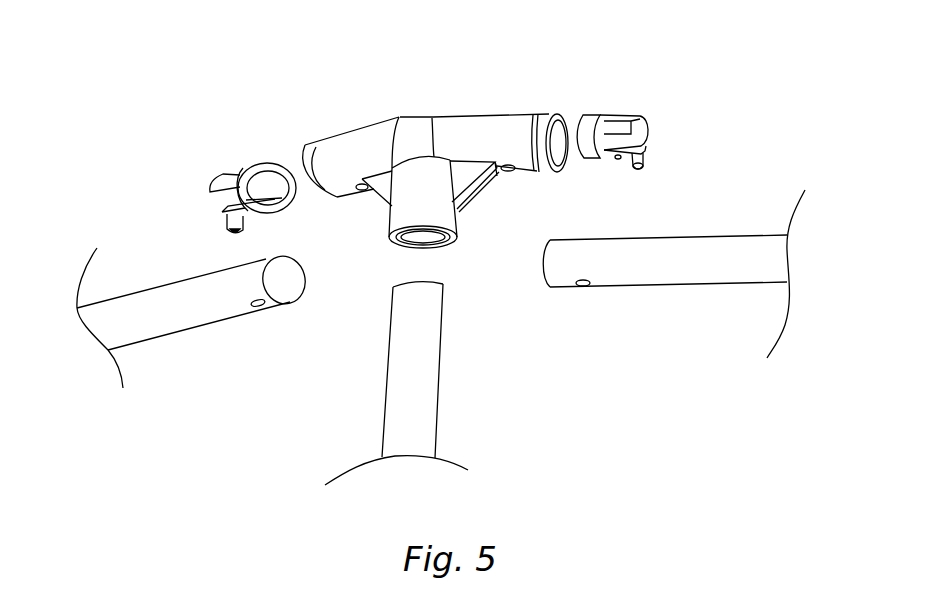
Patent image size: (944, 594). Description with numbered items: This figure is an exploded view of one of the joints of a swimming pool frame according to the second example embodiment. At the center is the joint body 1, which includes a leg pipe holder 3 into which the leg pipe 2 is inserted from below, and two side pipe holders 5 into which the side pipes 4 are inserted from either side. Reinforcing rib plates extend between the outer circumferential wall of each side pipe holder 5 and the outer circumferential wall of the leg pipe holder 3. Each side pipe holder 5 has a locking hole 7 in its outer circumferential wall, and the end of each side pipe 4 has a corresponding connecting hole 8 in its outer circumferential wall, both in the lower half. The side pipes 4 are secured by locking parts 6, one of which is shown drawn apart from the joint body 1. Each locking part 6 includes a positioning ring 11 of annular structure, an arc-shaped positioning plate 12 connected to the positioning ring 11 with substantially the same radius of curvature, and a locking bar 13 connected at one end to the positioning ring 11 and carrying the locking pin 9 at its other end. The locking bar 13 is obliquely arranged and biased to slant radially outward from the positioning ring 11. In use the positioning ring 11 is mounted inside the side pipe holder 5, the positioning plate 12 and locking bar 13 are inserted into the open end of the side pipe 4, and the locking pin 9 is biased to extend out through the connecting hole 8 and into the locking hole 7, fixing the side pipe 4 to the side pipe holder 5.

The joint body 1 is at (419, 128).
The leg pipe 2 is at (403, 353).
The leg pipe holder 3 is at (415, 205).
The side pipe 4 is at (187, 295).
The side pipe holder 5 is at (346, 150).
The locking part 6 is at (235, 177).
The locking hole 7 is at (512, 172).
The connecting hole 8 is at (579, 288).
The locking pin 9 is at (641, 168).
The positioning ring 11 is at (583, 124).
The positioning plate 12 is at (613, 118).
The locking bar 13 is at (618, 159).